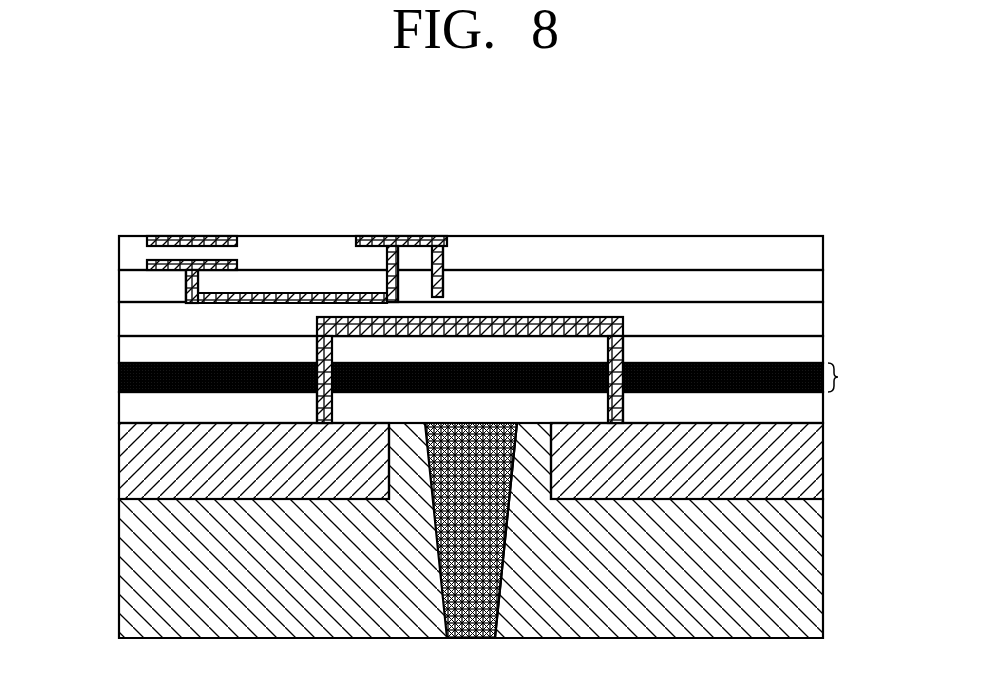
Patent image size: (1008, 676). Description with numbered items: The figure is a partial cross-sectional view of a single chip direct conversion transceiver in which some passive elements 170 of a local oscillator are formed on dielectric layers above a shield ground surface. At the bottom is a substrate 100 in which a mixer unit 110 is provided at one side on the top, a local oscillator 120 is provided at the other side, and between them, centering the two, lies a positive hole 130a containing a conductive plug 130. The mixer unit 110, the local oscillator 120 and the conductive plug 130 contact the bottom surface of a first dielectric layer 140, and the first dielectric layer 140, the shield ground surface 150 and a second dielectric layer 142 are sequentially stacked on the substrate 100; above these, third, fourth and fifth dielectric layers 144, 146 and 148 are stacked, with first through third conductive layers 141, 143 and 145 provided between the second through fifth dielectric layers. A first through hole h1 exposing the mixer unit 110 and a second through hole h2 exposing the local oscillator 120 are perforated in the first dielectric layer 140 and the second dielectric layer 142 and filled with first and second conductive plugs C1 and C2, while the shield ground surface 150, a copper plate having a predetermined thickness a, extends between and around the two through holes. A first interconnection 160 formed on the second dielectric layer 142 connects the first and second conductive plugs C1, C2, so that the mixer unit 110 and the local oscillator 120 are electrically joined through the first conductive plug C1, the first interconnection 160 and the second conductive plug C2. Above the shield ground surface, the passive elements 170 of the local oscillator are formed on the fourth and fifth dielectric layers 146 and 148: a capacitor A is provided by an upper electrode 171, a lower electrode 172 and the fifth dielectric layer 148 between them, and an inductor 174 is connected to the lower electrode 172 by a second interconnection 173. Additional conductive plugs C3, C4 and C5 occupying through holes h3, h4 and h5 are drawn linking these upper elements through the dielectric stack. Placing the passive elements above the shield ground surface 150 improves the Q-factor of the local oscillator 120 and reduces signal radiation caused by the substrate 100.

The substrate 100 is at (119, 541).
The mixer unit 110 is at (119, 460).
The local oscillator 120 is at (823, 463).
The conductive plug 130 is at (495, 580).
The positive hole 130a is at (508, 540).
The first dielectric layer 140 is at (119, 408).
The first conductive layer 141 is at (119, 330).
The second dielectric layer 142 is at (823, 347).
The second conductive layer 143 is at (119, 297).
The third dielectric layer 144 is at (823, 315).
The third conductive layer 145 is at (119, 263).
The fourth dielectric layer 146 is at (823, 283).
The fifth dielectric layer 148 is at (823, 250).
The shield ground surface 150 is at (119, 377).
The predetermined thickness a is at (842, 377).
The first interconnection 160 is at (555, 327).
The passive elements 170 is at (263, 239).
The upper electrode 171 is at (150, 241).
The lower electrode 172 is at (149, 265).
The second interconnection 173 is at (307, 297).
The inductor 174 is at (392, 240).
The capacitor A is at (128, 208).
The first conductive plug C1 is at (325, 350).
The second conductive plug C2 is at (620, 347).
The third conductive plug C3 is at (186, 290).
The fourth contact plug C4 is at (391, 243).
The fifth contact plug C5 is at (437, 244).
The first through hole h1 is at (313, 348).
The second through hole h2 is at (629, 346).
The third contact hole h3 is at (186, 288).
The fourth contact hole h4 is at (403, 257).
The fifth contact hole h5 is at (446, 258).